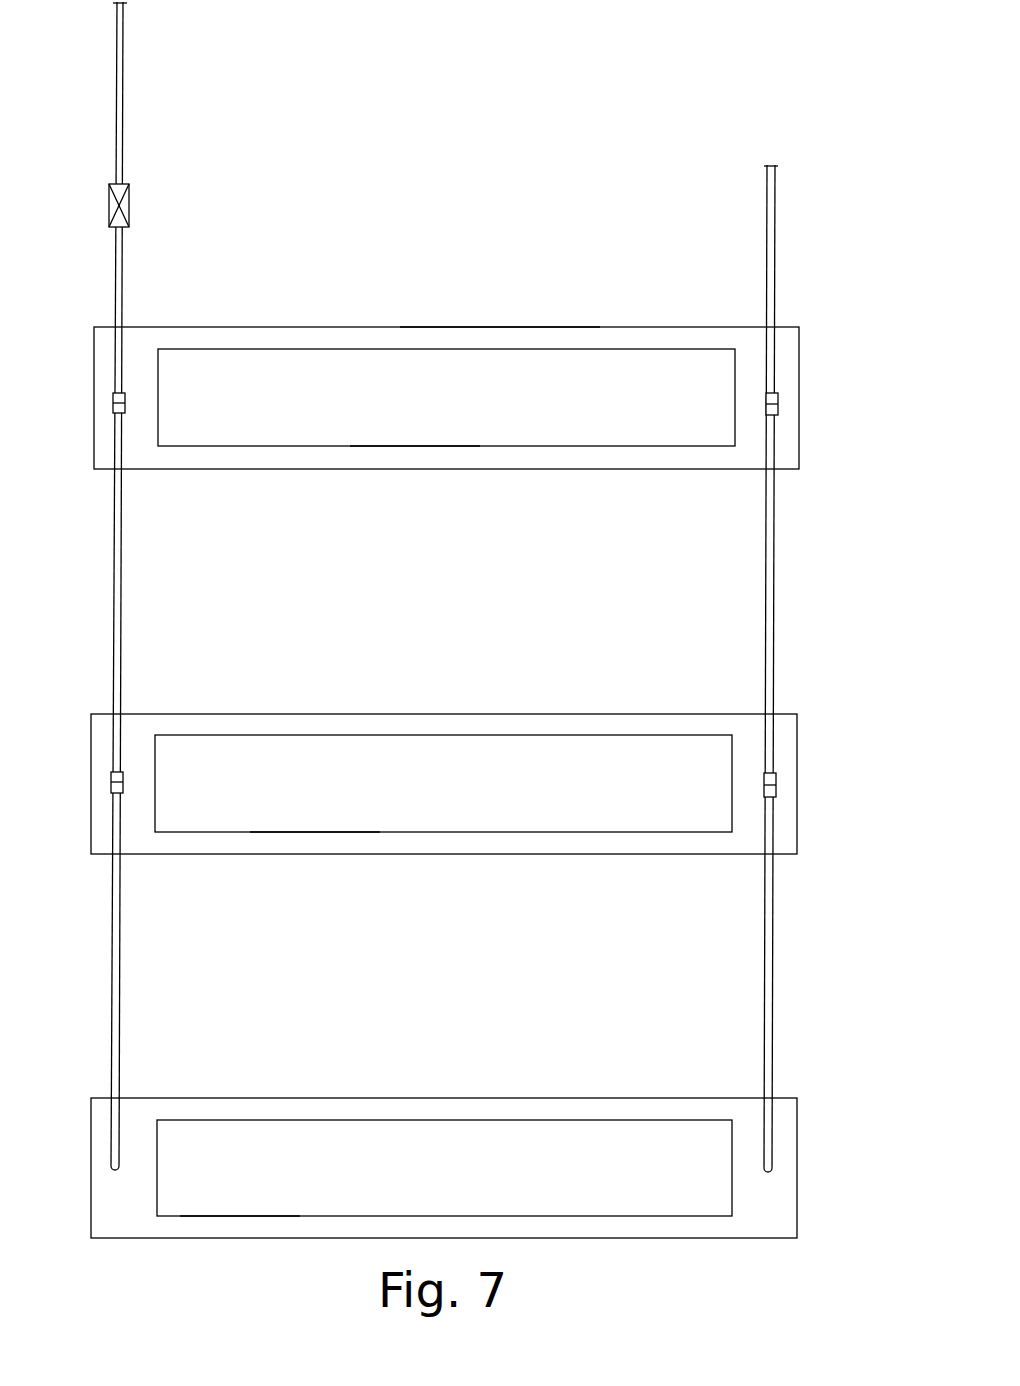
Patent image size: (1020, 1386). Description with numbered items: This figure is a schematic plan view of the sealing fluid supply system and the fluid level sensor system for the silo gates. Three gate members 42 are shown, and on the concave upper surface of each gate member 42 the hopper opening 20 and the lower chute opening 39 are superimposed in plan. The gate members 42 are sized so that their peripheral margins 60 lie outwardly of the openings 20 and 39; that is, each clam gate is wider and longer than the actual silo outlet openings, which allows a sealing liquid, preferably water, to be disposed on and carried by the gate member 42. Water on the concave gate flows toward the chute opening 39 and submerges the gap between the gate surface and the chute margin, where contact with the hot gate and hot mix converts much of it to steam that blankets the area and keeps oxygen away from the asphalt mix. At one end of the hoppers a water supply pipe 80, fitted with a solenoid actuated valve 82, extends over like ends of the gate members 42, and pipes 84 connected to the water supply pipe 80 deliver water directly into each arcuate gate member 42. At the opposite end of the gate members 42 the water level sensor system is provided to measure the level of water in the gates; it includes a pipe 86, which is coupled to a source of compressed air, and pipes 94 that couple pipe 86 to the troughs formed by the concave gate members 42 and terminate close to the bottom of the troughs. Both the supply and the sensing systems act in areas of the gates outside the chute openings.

The hopper opening 20 is at (590, 355).
The lower chute opening 39 is at (392, 445).
The gate member 42 is at (345, 325).
The peripheral margin 60 is at (512, 340).
The water supply pipe 80 is at (117, 100).
The solenoid actuated valve 82 is at (107, 197).
The pipe 84 is at (113, 402).
The pipe 86 is at (769, 220).
The pipe 94 is at (775, 790).